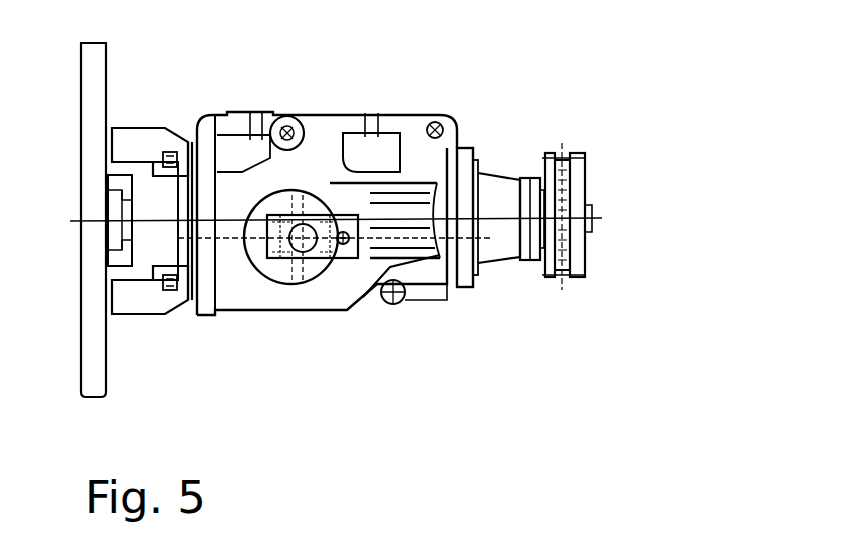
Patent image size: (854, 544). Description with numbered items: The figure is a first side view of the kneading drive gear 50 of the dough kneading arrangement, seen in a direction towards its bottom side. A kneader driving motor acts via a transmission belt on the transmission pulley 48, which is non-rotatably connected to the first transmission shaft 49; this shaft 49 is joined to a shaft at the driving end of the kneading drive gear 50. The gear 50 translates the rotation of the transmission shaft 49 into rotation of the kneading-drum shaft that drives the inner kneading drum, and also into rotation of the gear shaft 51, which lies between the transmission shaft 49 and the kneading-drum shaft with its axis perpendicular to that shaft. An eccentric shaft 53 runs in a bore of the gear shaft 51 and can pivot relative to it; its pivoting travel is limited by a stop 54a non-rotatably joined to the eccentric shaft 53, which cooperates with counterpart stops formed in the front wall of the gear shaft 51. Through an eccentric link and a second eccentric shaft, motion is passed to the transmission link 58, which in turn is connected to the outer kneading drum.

The transmission pulley 48 is at (577, 192).
The first transmission shaft 49 is at (580, 223).
The kneading drive gear 50 is at (464, 100).
The gear shaft 51 is at (272, 283).
The eccentric shaft 53 is at (325, 285).
The stop 54a is at (348, 253).
The transmission link 58 is at (152, 138).